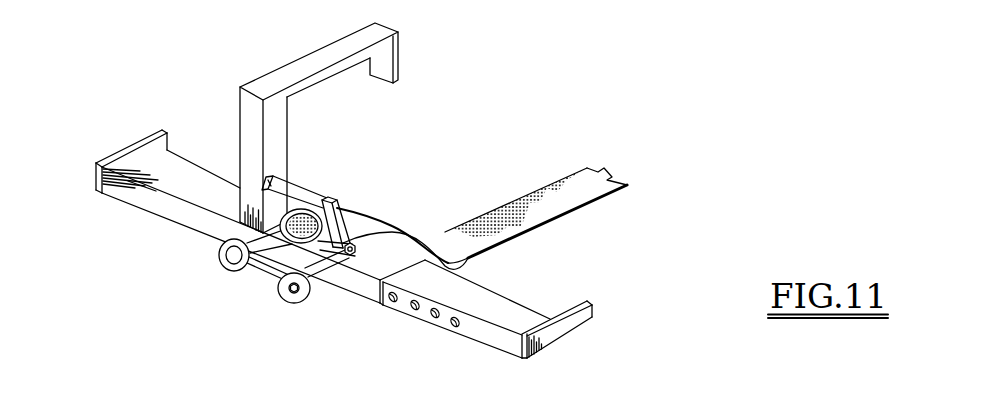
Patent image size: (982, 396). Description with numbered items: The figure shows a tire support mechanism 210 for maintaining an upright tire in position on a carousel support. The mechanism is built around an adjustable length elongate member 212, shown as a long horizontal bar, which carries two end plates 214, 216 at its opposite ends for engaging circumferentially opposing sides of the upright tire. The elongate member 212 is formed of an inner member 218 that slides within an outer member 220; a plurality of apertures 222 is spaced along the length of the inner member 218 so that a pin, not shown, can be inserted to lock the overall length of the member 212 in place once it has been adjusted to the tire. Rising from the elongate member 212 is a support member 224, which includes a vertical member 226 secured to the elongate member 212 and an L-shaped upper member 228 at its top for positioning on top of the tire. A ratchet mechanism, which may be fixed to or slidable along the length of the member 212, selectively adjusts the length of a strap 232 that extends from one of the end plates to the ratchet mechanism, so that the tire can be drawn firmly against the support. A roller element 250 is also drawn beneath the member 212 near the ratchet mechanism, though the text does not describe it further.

The tire support mechanism 210 is at (546, 281).
The adjustable length member 212 is at (217, 228).
The end plate 214 is at (158, 133).
The end plate 216 is at (575, 327).
The inner member 218 is at (490, 337).
The outer member 220 is at (123, 195).
The apertures 222 is at (412, 303).
The support member 224 is at (400, 115).
The vertical member 226 is at (275, 140).
The L-shaped upper member 228 is at (286, 72).
The strap 232 is at (575, 200).
The rollers 250 is at (287, 300).